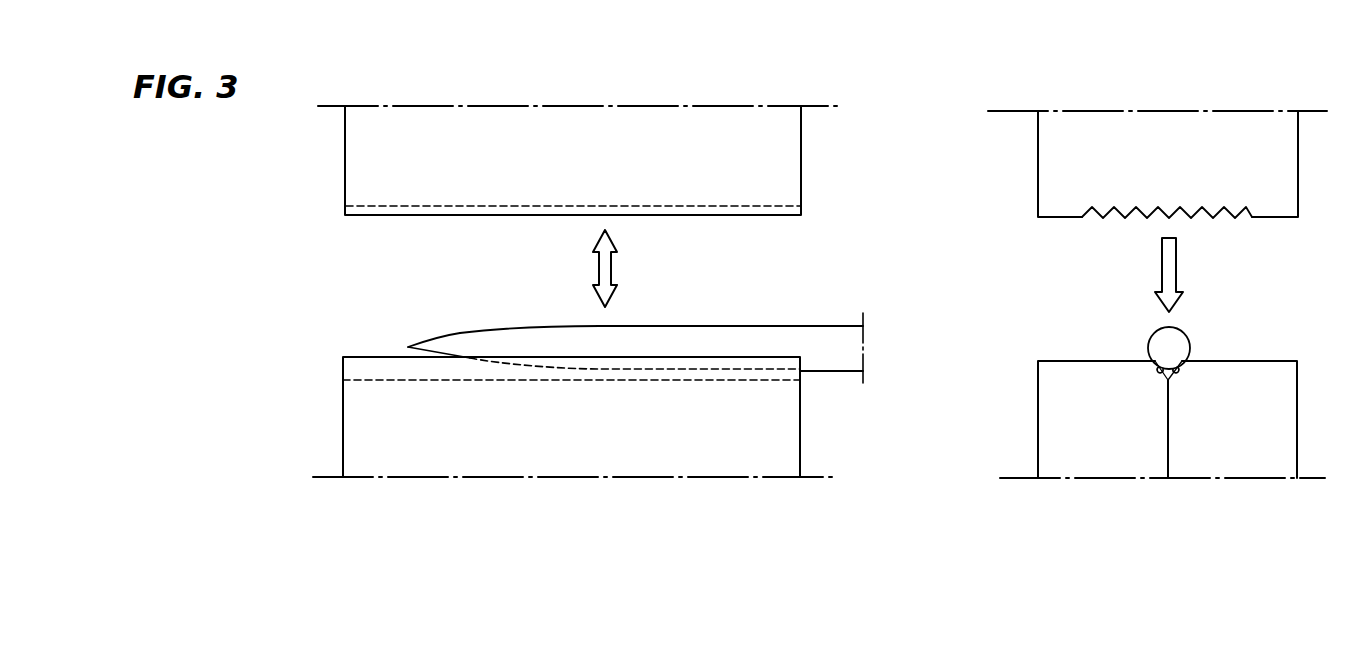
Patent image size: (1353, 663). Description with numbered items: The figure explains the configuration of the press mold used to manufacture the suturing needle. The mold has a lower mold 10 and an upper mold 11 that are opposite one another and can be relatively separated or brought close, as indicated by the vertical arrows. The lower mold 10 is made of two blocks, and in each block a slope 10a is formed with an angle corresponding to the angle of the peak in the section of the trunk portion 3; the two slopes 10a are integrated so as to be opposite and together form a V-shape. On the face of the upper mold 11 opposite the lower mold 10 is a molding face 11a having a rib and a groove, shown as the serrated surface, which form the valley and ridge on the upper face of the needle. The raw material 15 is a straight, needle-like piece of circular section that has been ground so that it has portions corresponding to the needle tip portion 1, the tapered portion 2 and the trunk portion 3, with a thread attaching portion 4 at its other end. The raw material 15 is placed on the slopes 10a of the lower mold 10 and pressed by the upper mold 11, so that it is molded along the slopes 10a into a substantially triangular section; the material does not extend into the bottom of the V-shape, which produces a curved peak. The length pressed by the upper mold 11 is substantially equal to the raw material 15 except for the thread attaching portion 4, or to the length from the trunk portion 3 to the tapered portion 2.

The needle tip portion 1 is at (444, 336).
The tapered portion 2 is at (531, 327).
The trunk portion 3 is at (651, 326).
The thread attaching portion 4 is at (828, 378).
The lower mold 10 is at (662, 458).
The slope 10a is at (410, 370).
The upper mold 11 is at (782, 162).
The molding face 11a is at (703, 216).
The raw material 15 is at (828, 342).